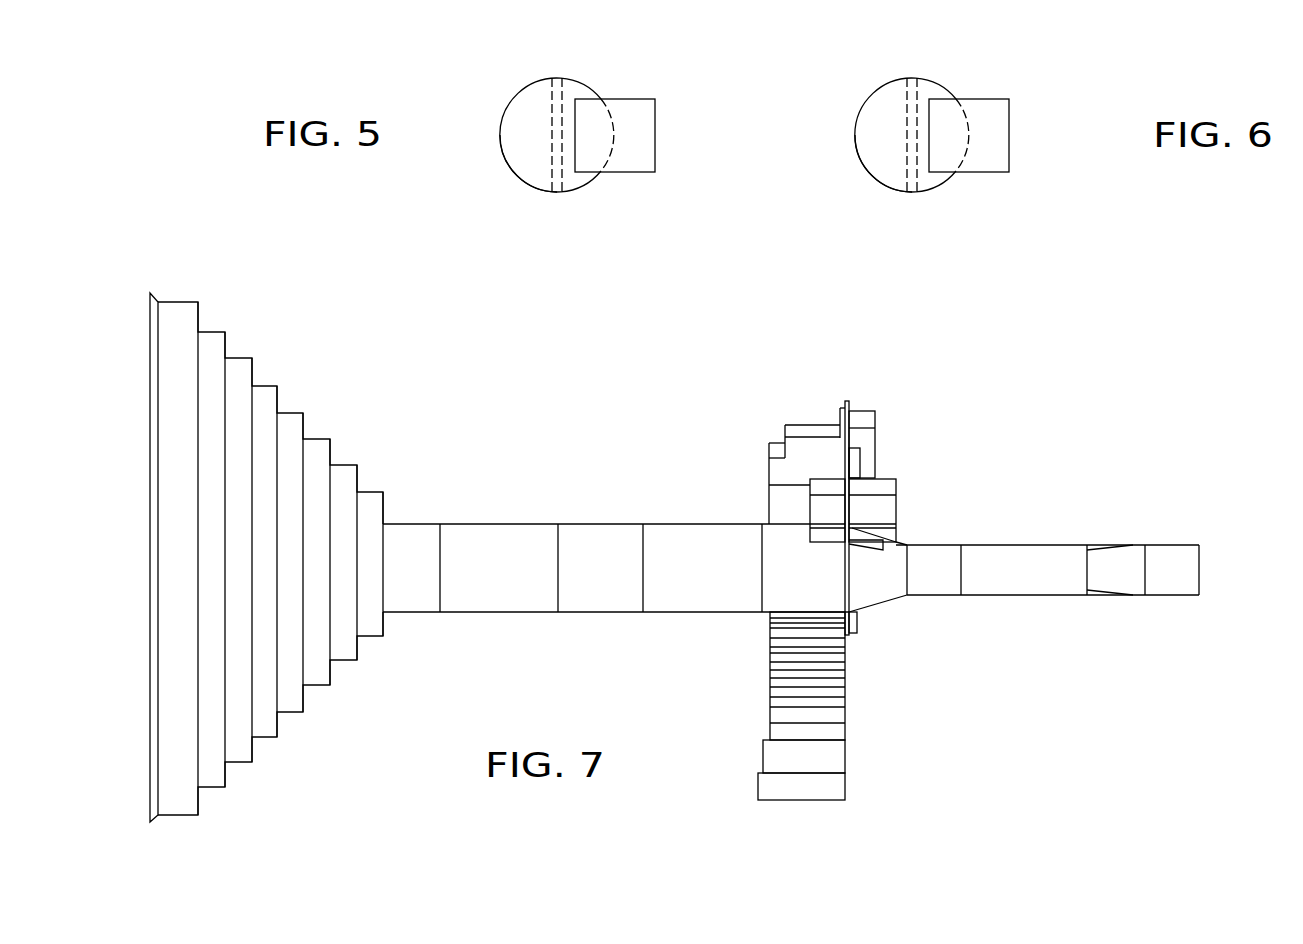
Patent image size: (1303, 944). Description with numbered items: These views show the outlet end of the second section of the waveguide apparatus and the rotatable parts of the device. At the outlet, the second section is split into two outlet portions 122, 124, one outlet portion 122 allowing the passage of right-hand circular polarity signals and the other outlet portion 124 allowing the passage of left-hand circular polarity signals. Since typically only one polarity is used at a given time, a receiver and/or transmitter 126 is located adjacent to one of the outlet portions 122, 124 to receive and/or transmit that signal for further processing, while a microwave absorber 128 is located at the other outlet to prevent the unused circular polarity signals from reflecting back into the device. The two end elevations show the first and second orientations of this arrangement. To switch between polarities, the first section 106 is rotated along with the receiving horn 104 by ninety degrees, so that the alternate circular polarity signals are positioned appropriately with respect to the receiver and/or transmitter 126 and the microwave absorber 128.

In FIG. 7, the receiving horn 104 is at (263, 392).
In FIG. 7, the first section 106 is at (598, 530).
In FIG. 5, the outlet portion 122 is at (576, 88).
In FIG. 6, the outlet portion 122 is at (868, 137).
In FIG. 5, the outlet portion 124 is at (515, 120).
In FIG. 6, the outlet portion 124 is at (937, 87).
In FIG. 5, the receiver and/or transmitter 126 is at (630, 157).
In FIG. 6, the receiver and/or transmitter 126 is at (1007, 133).
In FIG. 5, the microwave absorber 128 is at (523, 170).
In FIG. 6, the microwave absorber 128 is at (880, 167).